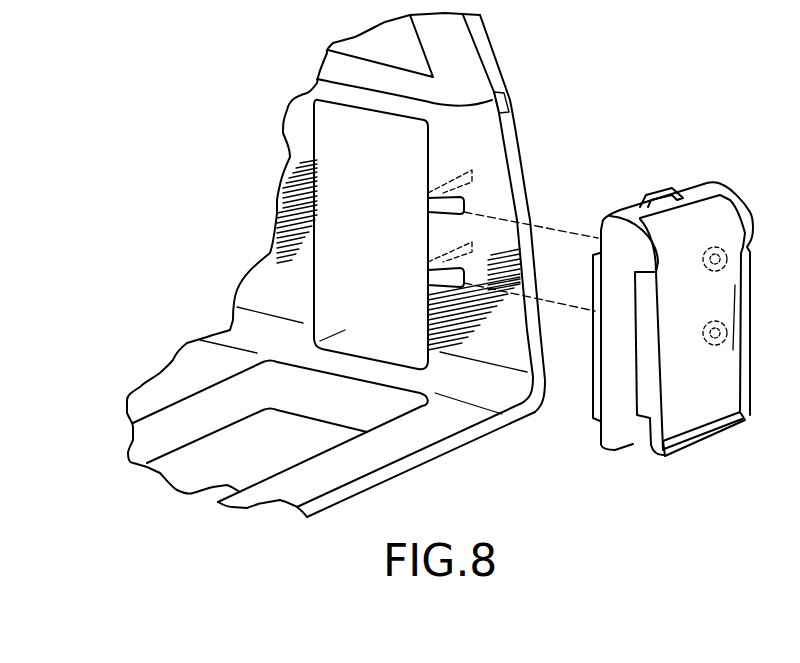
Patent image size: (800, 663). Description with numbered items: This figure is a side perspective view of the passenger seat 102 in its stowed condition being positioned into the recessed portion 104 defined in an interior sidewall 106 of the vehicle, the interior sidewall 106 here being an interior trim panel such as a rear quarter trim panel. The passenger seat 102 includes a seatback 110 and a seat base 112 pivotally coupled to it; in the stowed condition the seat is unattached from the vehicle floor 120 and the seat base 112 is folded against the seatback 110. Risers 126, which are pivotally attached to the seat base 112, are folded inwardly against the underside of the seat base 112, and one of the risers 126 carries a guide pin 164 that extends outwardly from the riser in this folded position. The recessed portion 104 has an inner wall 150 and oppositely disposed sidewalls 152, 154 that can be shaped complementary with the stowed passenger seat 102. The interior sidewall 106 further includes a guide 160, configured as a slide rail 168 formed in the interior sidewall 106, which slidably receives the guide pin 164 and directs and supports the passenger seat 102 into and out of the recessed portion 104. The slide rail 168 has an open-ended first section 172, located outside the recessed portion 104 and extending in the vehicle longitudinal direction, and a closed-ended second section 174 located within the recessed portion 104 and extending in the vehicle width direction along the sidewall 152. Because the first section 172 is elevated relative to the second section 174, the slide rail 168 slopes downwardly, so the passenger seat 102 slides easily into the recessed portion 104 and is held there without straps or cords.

The passenger seat 102 is at (647, 281).
The recessed portion 104 is at (301, 118).
The interior sidewall 106 is at (492, 137).
The seatback 110 is at (683, 418).
The seat base 112 is at (615, 430).
The floor 120 is at (400, 442).
The risers 126 is at (593, 393).
The inner wall 150 is at (383, 130).
The sidewall 152 is at (426, 237).
The sidewall 154 is at (325, 201).
The guide 160 is at (493, 192).
The guide pin 164 is at (707, 262).
The slide rail 168 is at (428, 198).
The first section 172 is at (443, 290).
The second section 174 is at (457, 173).